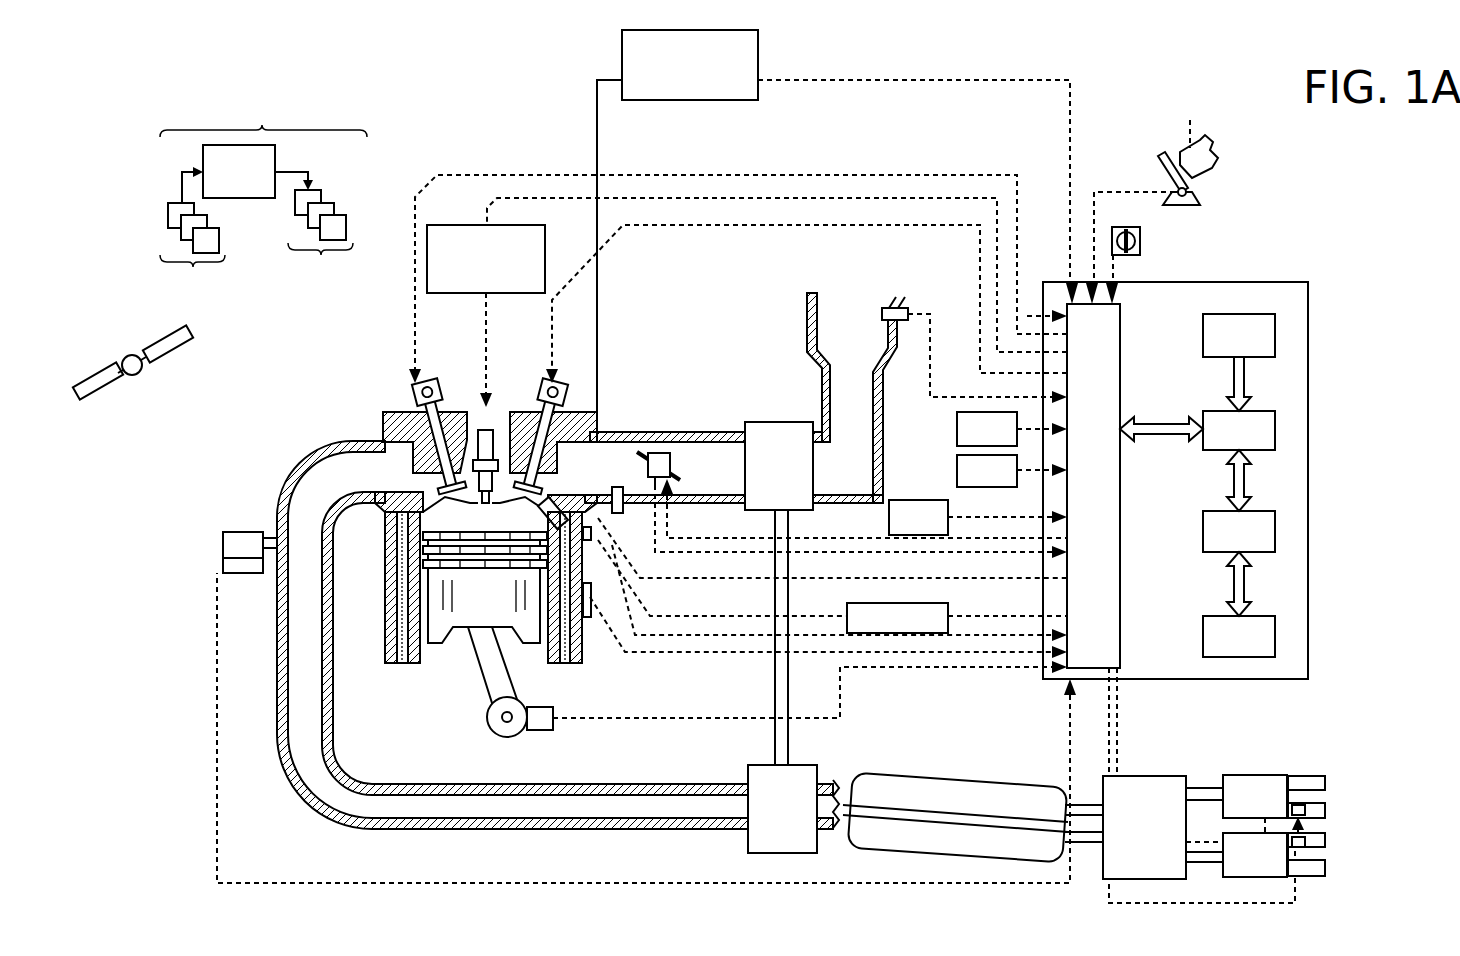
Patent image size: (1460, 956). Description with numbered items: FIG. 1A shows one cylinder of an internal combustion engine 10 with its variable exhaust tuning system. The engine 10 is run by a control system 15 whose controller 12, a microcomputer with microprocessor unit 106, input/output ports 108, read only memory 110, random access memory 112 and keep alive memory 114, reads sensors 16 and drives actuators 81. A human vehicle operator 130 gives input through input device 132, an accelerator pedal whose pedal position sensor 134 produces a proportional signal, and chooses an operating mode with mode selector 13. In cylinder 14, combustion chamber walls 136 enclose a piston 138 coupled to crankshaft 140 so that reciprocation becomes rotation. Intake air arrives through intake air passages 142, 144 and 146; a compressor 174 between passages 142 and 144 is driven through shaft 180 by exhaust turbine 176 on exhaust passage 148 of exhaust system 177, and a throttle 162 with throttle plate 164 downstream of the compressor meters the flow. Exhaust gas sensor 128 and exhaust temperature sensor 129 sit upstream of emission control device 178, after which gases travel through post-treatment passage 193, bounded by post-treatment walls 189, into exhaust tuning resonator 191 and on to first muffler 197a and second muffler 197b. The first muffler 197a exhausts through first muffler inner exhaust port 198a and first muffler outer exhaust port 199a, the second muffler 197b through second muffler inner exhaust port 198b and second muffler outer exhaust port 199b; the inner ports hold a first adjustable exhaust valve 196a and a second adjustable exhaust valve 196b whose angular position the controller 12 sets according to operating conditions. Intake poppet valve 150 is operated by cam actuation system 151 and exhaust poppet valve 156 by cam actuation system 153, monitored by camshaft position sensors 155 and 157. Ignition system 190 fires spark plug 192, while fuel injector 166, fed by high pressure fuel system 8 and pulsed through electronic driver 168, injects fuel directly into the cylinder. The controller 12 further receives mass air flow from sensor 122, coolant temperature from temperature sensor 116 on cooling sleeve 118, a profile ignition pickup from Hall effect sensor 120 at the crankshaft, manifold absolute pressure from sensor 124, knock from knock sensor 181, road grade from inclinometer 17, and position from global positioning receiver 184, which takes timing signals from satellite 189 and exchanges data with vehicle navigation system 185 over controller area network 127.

The high pressure fuel system 8 is at (758, 43).
The internal combustion engine 10 is at (518, 111).
The controller 12 is at (251, 185).
The mode selector 13 is at (1140, 240).
The cylinder 14 is at (408, 525).
The control system 15 is at (263, 116).
The sensors 16 is at (156, 230).
The inclinometer 17 is at (1012, 429).
The actuators 81 is at (331, 226).
The microprocessor unit 106 is at (1275, 425).
The input/output ports 108 is at (1120, 312).
The read only memory 110 is at (1275, 330).
The random access memory 112 is at (1275, 533).
The keep alive memory 114 is at (1275, 632).
The temperature sensor 116 is at (595, 550).
The cooling sleeve 118 is at (585, 640).
The Hall effect sensor 120 is at (552, 730).
The mass air flow sensor 122 is at (900, 306).
The manifold absolute pressure sensor 124 is at (623, 520).
The controller area network 127 is at (965, 510).
The exhaust gas sensor 128 is at (223, 540).
The exhaust temperature sensor 129 is at (223, 565).
The human vehicle operator 130 is at (1215, 158).
The input device 132 is at (1163, 165).
The pedal position sensor 134 is at (1193, 195).
The combustion chamber walls 136 is at (425, 665).
The piston 138 is at (470, 630).
The crankshaft 140 is at (500, 735).
The intake air passage 142 is at (885, 342).
The intake air passage 144 is at (734, 477).
The intake air passage 146 is at (632, 477).
The exhaust passage 148 is at (372, 487).
The intake poppet valve 150 is at (523, 490).
The cam actuation system 151 is at (540, 380).
The cam actuation system 153 is at (415, 378).
The camshaft position sensor 155 is at (568, 390).
The exhaust poppet valve 156 is at (447, 488).
The camshaft position sensor 157 is at (410, 400).
The throttle 162 is at (670, 455).
The throttle plate 164 is at (645, 452).
The fuel injector 166 is at (560, 494).
The electronic driver 168 is at (848, 605).
The compressor 174 is at (762, 420).
The exhaust turbine 176 is at (748, 835).
The exhaust system 177 is at (334, 843).
The emission control device 178 is at (900, 780).
The shaft 180 is at (778, 727).
The knock sensor 181 is at (583, 640).
The global positioning receiver 184 is at (1012, 471).
The vehicle navigation system 185 is at (978, 517).
The satellite 189 is at (175, 352).
The ignition system 190 is at (440, 225).
The exhaust tuning resonator 191 is at (1130, 776).
The spark plug 192 is at (482, 445).
The post-treatment passage 193 is at (1085, 823).
The first adjustable exhaust valve 196a is at (1312, 803).
The second adjustable exhaust valve 196b is at (1322, 847).
The first muffler 197a is at (1258, 775).
The second muffler 197b is at (1290, 877).
The first muffler inner exhaust port 198a is at (1307, 810).
The second muffler inner exhaust port 198b is at (1307, 840).
The first muffler outer exhaust port 199a is at (1316, 776).
The second muffler outer exhaust port 199b is at (1325, 865).